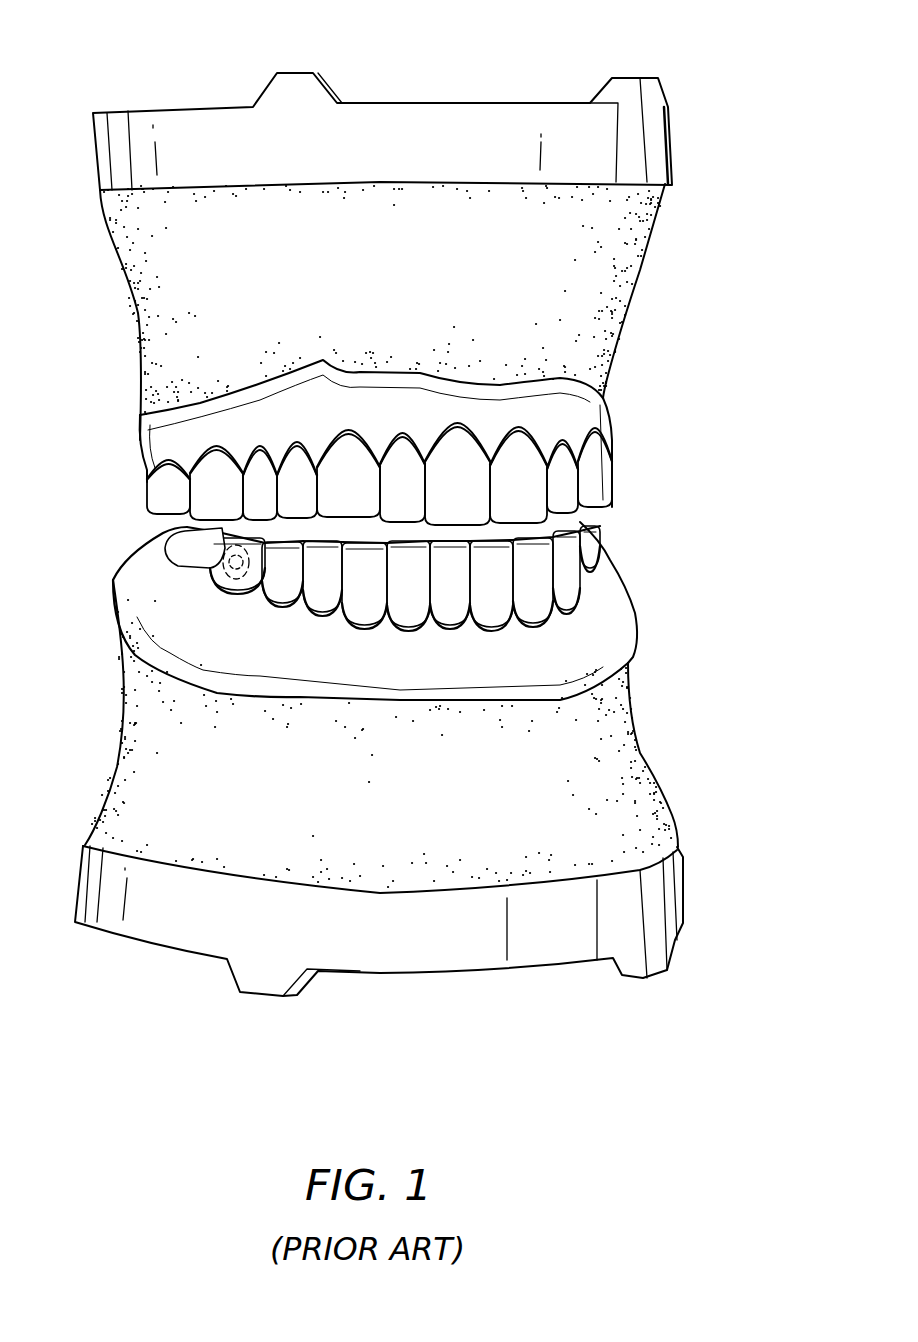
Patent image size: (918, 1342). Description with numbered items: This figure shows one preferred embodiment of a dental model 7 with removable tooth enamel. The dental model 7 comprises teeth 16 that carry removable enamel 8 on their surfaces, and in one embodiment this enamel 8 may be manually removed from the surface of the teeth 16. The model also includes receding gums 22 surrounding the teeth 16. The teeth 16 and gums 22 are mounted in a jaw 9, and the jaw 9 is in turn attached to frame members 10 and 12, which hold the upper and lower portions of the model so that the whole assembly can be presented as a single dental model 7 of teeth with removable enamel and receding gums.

The dental model 7 is at (448, 65).
The removable enamel 8 is at (230, 563).
The jaw 9 is at (630, 270).
The frame member 10 is at (665, 130).
The frame member 12 is at (663, 912).
The teeth 16 is at (257, 498).
The receding gums 22 is at (138, 438).